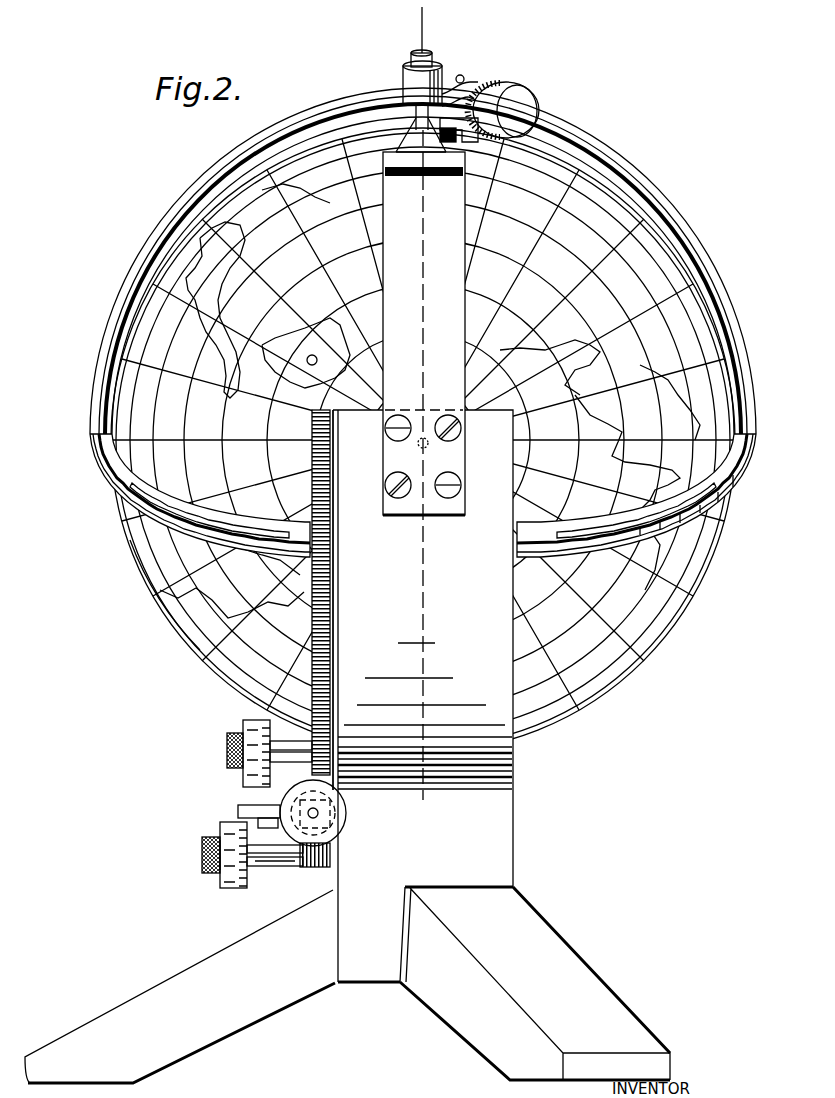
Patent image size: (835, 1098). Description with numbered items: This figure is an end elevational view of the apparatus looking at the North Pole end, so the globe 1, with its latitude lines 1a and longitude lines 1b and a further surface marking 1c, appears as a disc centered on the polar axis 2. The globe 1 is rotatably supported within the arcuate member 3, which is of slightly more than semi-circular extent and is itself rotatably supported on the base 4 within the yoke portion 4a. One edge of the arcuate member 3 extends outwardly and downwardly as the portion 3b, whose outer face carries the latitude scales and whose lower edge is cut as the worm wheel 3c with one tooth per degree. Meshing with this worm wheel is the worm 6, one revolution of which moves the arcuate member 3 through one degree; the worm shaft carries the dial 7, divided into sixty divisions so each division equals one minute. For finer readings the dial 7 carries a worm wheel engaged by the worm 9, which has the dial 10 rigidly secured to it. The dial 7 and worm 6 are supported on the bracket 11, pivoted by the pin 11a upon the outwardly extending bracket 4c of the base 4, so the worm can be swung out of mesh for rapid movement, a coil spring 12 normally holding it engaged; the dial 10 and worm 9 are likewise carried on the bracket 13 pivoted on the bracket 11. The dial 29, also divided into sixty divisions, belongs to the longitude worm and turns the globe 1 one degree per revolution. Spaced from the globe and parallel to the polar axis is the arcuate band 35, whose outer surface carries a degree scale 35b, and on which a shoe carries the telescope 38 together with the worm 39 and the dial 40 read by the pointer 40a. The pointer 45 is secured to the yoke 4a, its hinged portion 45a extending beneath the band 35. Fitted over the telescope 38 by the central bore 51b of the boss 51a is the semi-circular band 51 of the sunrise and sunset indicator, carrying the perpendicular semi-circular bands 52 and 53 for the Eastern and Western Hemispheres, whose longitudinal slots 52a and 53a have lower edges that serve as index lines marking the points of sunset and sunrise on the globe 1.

The globe 1 is at (640, 628).
The latitude lines 1a is at (185, 588).
The longitude lines 1b is at (198, 628).
The globe surface portion 1c is at (655, 652).
The polar axis 2 is at (428, 446).
The arcuate member 3 is at (414, 32).
The outwardly and downwardly extending portion 3b is at (312, 712).
The worm wheel 3c is at (312, 735).
The base 4 is at (487, 870).
The yoke portion 4a is at (468, 670).
The outwardly extending bracket 4c is at (266, 812).
The worm 6 is at (283, 868).
The dial 7 is at (340, 828).
The worm 9 is at (313, 868).
The dial 10 is at (222, 882).
The bracket 11 is at (204, 852).
The pin 11a is at (212, 862).
The coil spring 12 is at (258, 822).
The bracket 13 is at (268, 866).
The dial 29 is at (232, 752).
The arcuate band 35 is at (522, 130).
The scale 35b is at (448, 142).
The telescope 38 is at (432, 58).
The worm 39 is at (468, 82).
The dial 40 is at (528, 108).
The pointer 40a is at (513, 97).
The pointer 45 is at (458, 262).
The hinged portion of pointer 45a is at (393, 133).
The semi-circular band 51 is at (173, 213).
The boss 51a is at (404, 82).
The central bore 51b is at (412, 60).
The semi-circular band 52 is at (118, 486).
The slot 52a is at (162, 540).
The semi-circular band 53 is at (705, 500).
The slot 53a is at (690, 524).